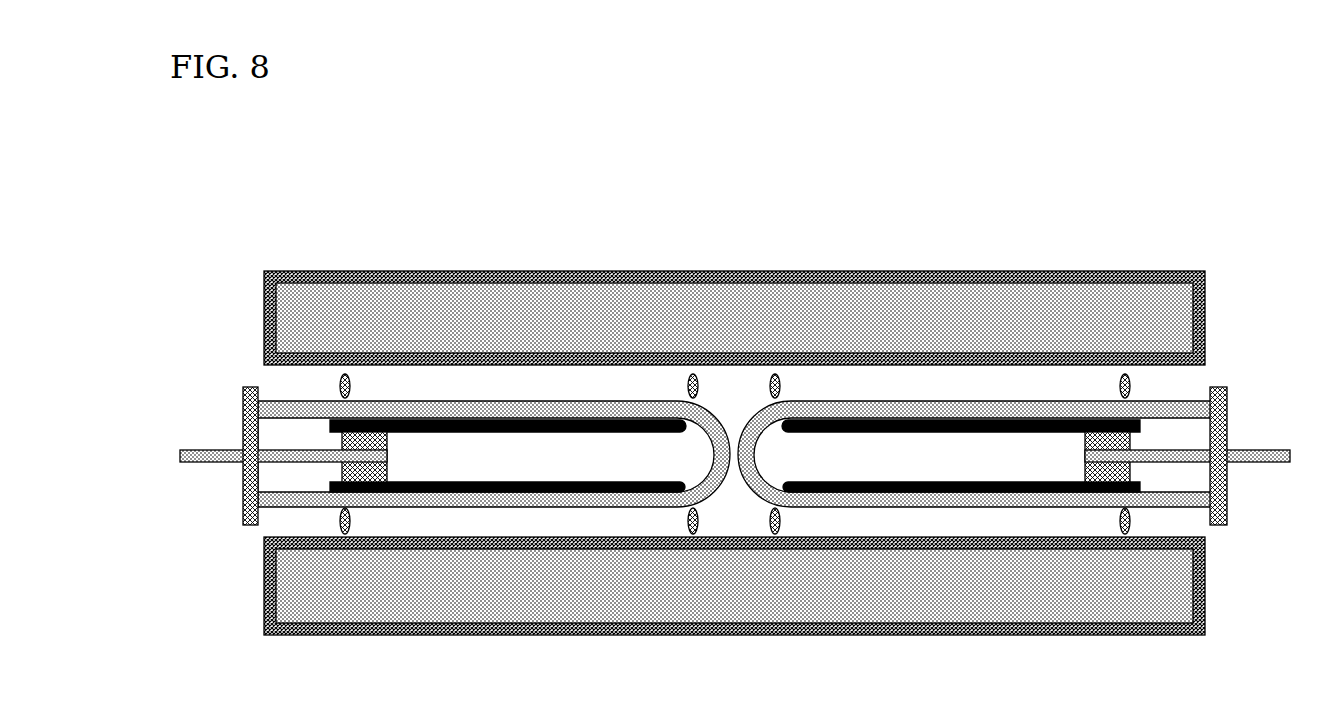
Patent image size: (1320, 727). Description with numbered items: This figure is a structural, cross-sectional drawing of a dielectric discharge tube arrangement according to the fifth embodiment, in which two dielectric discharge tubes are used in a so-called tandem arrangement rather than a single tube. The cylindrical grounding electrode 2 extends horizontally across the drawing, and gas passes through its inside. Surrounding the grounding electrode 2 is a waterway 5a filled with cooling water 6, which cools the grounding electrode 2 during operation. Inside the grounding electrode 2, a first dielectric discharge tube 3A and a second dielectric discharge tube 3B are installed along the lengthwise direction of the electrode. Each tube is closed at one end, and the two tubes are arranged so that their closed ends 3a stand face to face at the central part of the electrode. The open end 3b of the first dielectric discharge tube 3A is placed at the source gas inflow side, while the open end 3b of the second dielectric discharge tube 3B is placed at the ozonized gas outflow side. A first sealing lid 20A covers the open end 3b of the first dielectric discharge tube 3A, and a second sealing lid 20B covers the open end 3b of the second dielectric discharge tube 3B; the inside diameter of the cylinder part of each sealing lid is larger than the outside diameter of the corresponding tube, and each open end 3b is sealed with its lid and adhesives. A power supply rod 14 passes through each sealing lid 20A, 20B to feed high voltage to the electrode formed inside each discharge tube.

The grounding electrode 2 is at (1206, 326).
The cooling water 6 is at (700, 315).
The waterway 5a is at (843, 308).
The first dielectric discharge tube 3A is at (475, 503).
The second dielectric discharge tube 3B is at (925, 503).
The closed end 3a is at (747, 418).
The open end 3b is at (262, 479).
The power supply rod 14 is at (198, 452).
The first sealing lid 20A is at (245, 372).
The second sealing lid 20B is at (1282, 357).